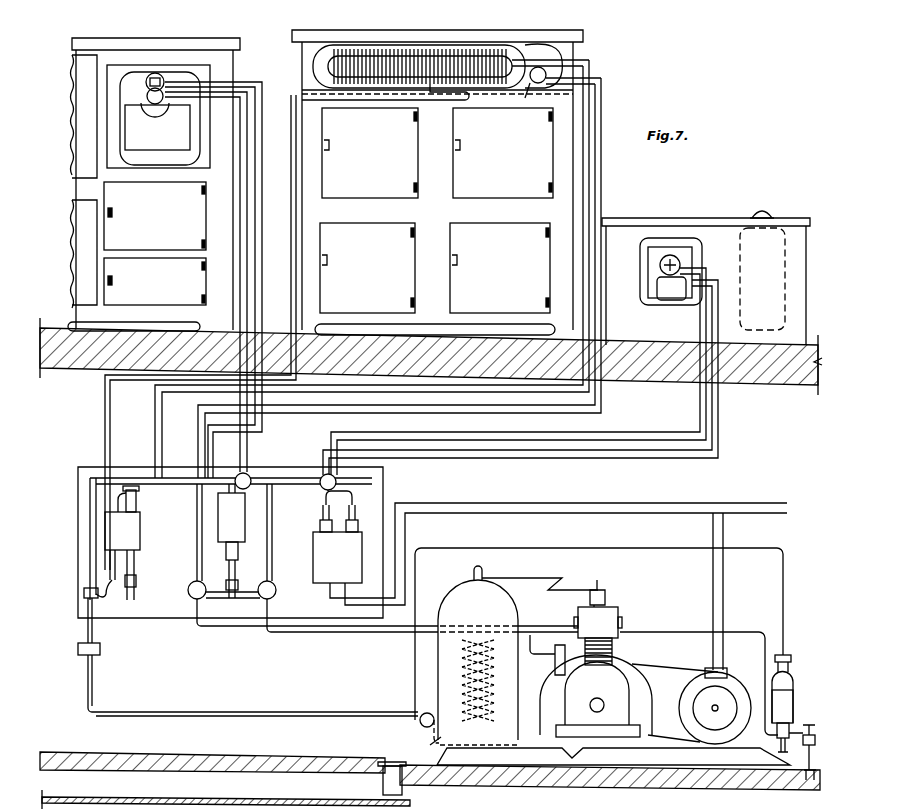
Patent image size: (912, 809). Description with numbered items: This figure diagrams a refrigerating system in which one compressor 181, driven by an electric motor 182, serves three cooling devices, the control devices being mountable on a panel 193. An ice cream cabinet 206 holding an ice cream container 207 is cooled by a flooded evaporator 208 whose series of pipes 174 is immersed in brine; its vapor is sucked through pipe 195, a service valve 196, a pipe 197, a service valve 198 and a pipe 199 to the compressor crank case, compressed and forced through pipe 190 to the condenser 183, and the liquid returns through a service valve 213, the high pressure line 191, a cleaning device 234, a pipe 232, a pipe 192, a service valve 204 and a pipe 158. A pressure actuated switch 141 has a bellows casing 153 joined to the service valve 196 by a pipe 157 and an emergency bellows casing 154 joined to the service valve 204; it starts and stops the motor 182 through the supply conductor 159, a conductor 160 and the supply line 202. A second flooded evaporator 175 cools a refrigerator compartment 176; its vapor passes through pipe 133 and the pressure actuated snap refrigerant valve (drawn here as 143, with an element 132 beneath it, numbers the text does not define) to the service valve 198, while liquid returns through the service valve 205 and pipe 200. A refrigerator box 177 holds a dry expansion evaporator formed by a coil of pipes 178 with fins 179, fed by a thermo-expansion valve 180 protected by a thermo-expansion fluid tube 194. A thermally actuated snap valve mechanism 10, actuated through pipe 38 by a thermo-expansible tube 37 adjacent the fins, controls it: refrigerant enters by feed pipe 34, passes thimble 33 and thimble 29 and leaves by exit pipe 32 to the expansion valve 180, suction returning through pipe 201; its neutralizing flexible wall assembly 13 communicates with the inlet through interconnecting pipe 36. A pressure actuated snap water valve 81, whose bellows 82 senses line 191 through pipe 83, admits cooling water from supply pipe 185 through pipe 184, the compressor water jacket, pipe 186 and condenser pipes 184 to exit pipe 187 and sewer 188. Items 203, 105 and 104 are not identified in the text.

The refrigerator compartment 176 is at (180, 58).
The flooded type evaporator 175 is at (134, 110).
The pipe 133 is at (255, 290).
The exit pipe 32 is at (578, 182).
The refrigerator box 177 is at (360, 44).
The fins 179 is at (455, 50).
The coil of pipes 178 is at (520, 55).
The thermo-expansion valve 180 is at (541, 67).
The thermo-expansion fluid tube 194 is at (521, 96).
The thermo-expansible tube 37 is at (442, 97).
The pipe 201 is at (592, 195).
The pipe 200 is at (240, 432).
The ice cream cabinet 206 is at (665, 228).
The ice cream container 207 is at (775, 222).
The evaporator 208 is at (660, 265).
The series of pipes 174 is at (656, 295).
The pipe 158 is at (598, 432).
The pipe 195 is at (510, 462).
The pipe 38 is at (104, 445).
The interconnecting pipe 36 is at (98, 480).
The panel 193 is at (384, 474).
The pipe 192 is at (89, 545).
The service valve 205 is at (253, 478).
The service valve 204 is at (336, 478).
The thermally actuated snap valve mechanism 10 is at (122, 556).
The upper neutralizing flexible wall assembly 13 is at (137, 505).
The thimble 29 is at (138, 582).
The thimble 33 is at (110, 592).
The feed pipe 34 is at (92, 600).
The pipe 232 is at (86, 628).
The cleaning device 234 is at (100, 650).
The high pressure refrigerant fluid line 191 is at (305, 712).
The control device 143 is at (233, 541).
The coupling 132 is at (240, 590).
The service valve 198 is at (188, 598).
The service valve 196 is at (275, 596).
The pipe 197 is at (232, 626).
The pipe 199 is at (322, 632).
The conduit 203 is at (175, 618).
The pressure actuated switch 141 is at (337, 557).
The casing 154 is at (320, 524).
The casing 153 is at (366, 518).
The pipe 157 is at (345, 494).
The conductor 160 is at (340, 605).
The supply conductor 159 is at (360, 600).
The supply line 202 is at (780, 515).
The conductor 105 is at (725, 640).
The pipe 83 is at (414, 650).
The service valve 213 is at (428, 712).
The exit pipe 187 is at (428, 742).
The condenser 183 is at (452, 595).
The condenser pipes 184 is at (470, 645).
The pipe 190 is at (553, 575).
The pipe 186 is at (545, 626).
The refrigerating compressor 181 is at (620, 618).
The electric motor 182 is at (700, 676).
The bellows 82 is at (792, 668).
The pressure actuated snap water valve 81 is at (782, 721).
The valve 104 is at (810, 730).
The supply pipe 185 is at (808, 768).
The sewer 188 is at (388, 765).